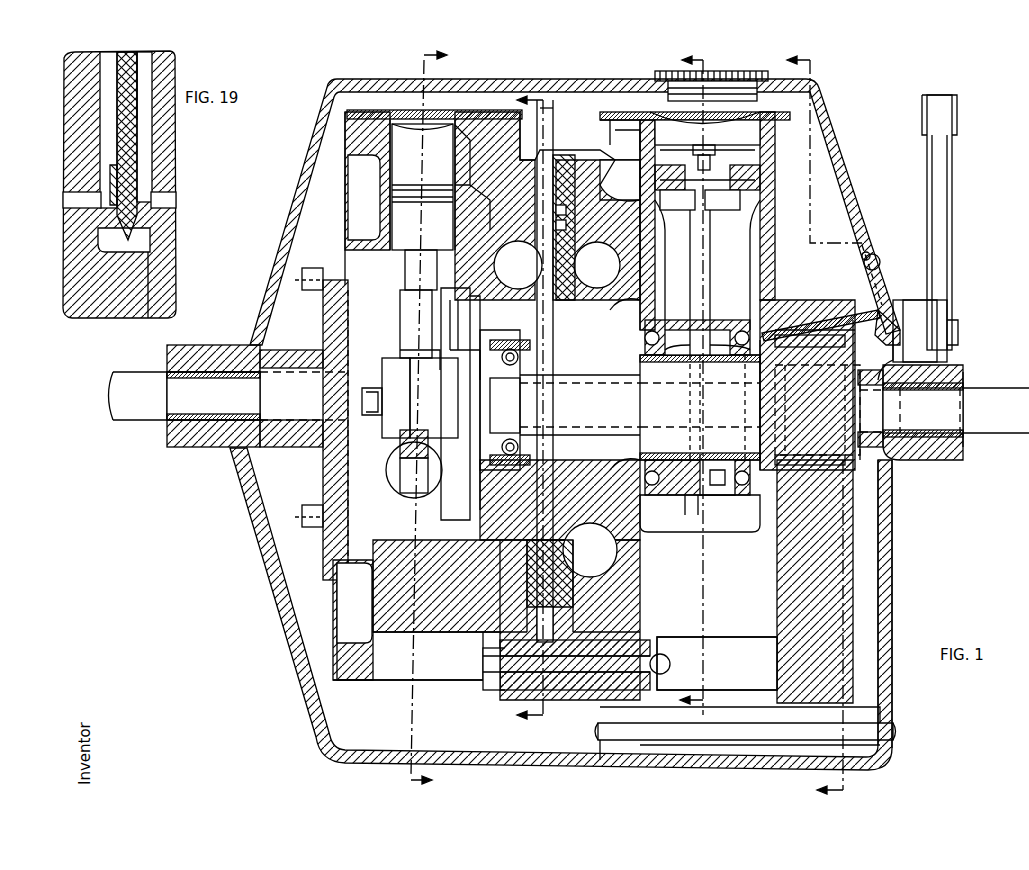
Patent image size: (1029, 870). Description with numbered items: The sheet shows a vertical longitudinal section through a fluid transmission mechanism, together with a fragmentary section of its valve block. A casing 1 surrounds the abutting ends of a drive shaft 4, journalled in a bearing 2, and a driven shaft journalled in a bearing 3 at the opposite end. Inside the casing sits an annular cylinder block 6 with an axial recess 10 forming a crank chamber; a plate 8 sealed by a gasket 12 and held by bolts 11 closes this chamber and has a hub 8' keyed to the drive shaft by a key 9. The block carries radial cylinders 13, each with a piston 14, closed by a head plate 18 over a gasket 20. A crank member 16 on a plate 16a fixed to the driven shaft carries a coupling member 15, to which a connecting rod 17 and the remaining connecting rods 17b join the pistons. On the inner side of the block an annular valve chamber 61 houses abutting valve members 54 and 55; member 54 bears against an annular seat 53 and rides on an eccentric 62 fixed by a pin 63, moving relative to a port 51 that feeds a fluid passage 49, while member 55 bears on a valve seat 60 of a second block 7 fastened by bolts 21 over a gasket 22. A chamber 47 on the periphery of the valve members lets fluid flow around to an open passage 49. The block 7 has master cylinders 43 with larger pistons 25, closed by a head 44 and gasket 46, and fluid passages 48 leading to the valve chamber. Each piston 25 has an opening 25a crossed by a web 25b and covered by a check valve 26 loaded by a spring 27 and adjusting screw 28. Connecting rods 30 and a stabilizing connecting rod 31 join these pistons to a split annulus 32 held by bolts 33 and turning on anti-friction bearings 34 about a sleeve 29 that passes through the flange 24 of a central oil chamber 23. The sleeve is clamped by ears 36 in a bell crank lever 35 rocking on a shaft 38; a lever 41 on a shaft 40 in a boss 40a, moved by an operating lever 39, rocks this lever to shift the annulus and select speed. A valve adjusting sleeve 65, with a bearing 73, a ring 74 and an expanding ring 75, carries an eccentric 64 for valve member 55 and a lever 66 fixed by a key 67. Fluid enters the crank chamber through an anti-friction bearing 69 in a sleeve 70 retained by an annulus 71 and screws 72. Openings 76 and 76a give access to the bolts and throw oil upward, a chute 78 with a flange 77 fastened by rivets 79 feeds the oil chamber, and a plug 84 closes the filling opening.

In FIG. 1, the casing 1 is at (290, 210).
In FIG. 1, the bearing 2 is at (167, 430).
In FIG. 1, the bearing 3 is at (965, 435).
In FIG. 1, the drive shaft 4 is at (132, 405).
In FIG. 19, the cylinder block 6 is at (70, 84).
In FIG. 1, the cylinder block 6 is at (390, 595).
In FIG. 19, the second block 7 is at (160, 129).
In FIG. 1, the plate 8 is at (319, 430).
In FIG. 1, the hub 8' is at (291, 451).
In FIG. 1, the key 9 is at (297, 370).
In FIG. 1, the axial recess 10 is at (323, 495).
In FIG. 1, the bolts 11 is at (300, 525).
In FIG. 1, the gasket 12 is at (337, 568).
In FIG. 1, the cylinders 13 is at (440, 150).
In FIG. 1, the piston 14 is at (410, 222).
In FIG. 1, the coupling member 15 is at (392, 430).
In FIG. 1, the crank member 16 is at (362, 395).
In FIG. 1, the plate 16a is at (450, 352).
In FIG. 1, the connecting rod 17 is at (418, 470).
In FIG. 1, the connecting rods 17b is at (405, 312).
In FIG. 1, the head plate 18 is at (405, 112).
In FIG. 1, the gasket 20 is at (345, 116).
In FIG. 1, the bolts 21 is at (490, 680).
In FIG. 1, the gasket 22 is at (555, 690).
In FIG. 1, the oil chamber 23 is at (770, 320).
In FIG. 1, the flange 24 is at (790, 332).
In FIG. 1, the piston 25 is at (760, 210).
In FIG. 1, the opening 25a is at (675, 187).
In FIG. 1, the web 25b is at (732, 187).
In FIG. 1, the check valve 26 is at (715, 158).
In FIG. 1, the spring 27 is at (760, 130).
In FIG. 1, the adjusting screw 28 is at (730, 125).
In FIG. 1, the sleeve 29 is at (858, 475).
In FIG. 1, the connecting rods 30 is at (703, 283).
In FIG. 1, the stabilizing connecting rod 31 is at (700, 510).
In FIG. 1, the split annulus 32 is at (665, 480).
In FIG. 1, the bolts 33 is at (720, 465).
In FIG. 1, the anti-friction bearings 34 is at (647, 338).
In FIG. 1, the bell crank lever 35 is at (888, 545).
In FIG. 1, the ears 36 is at (882, 300).
In FIG. 1, the shaft 38 is at (895, 735).
In FIG. 1, the operating lever 39 is at (952, 196).
In FIG. 1, the shaft 40 is at (950, 330).
In FIG. 1, the boss 40a is at (950, 300).
In FIG. 1, the lever 41 is at (895, 320).
In FIG. 1, the master cylinders 43 is at (642, 140).
In FIG. 1, the head 44 is at (615, 120).
In FIG. 1, the gasket 46 is at (605, 120).
In FIG. 19, the chamber 47 is at (150, 244).
In FIG. 1, the chamber 47 is at (538, 120).
In FIG. 19, the fluid passages 48 is at (170, 199).
In FIG. 1, the fluid passages 48 is at (560, 120).
In FIG. 19, the fluid passage 49 is at (66, 200).
In FIG. 1, the fluid passage 49 is at (547, 108).
In FIG. 1, the port 51 is at (525, 205).
In FIG. 1, the annular seat 53 is at (515, 185).
In FIG. 19, the valve member 54 is at (124, 50).
In FIG. 1, the valve member 54 is at (510, 640).
In FIG. 19, the valve member 55 is at (138, 58).
In FIG. 1, the valve member 55 is at (553, 607).
In FIG. 1, the valve seat 60 is at (500, 660).
In FIG. 19, the valve chamber 61 is at (145, 58).
In FIG. 1, the valve chamber 61 is at (415, 632).
In FIG. 1, the eccentric 62 is at (597, 265).
In FIG. 1, the pin 63 is at (590, 550).
In FIG. 1, the eccentric 64 is at (640, 390).
In FIG. 1, the valve adjusting sleeve 65 is at (795, 403).
In FIG. 1, the lever 66 is at (905, 462).
In FIG. 1, the key 67 is at (950, 395).
In FIG. 1, the anti-friction bearing 69 is at (490, 470).
In FIG. 1, the sleeve 70 is at (518, 265).
In FIG. 1, the annulus 71 is at (505, 345).
In FIG. 1, the screws 72 is at (480, 300).
In FIG. 1, the bearing 73 is at (626, 478).
In FIG. 1, the ring 74 is at (645, 345).
In FIG. 1, the expanding ring 75 is at (560, 430).
In FIG. 1, the opening 76 is at (403, 665).
In FIG. 1, the opening 76a is at (712, 680).
In FIG. 1, the flange 77 is at (870, 245).
In FIG. 1, the chute 78 is at (815, 325).
In FIG. 1, the rivets 79 is at (880, 262).
In FIG. 1, the plug 84 is at (747, 71).